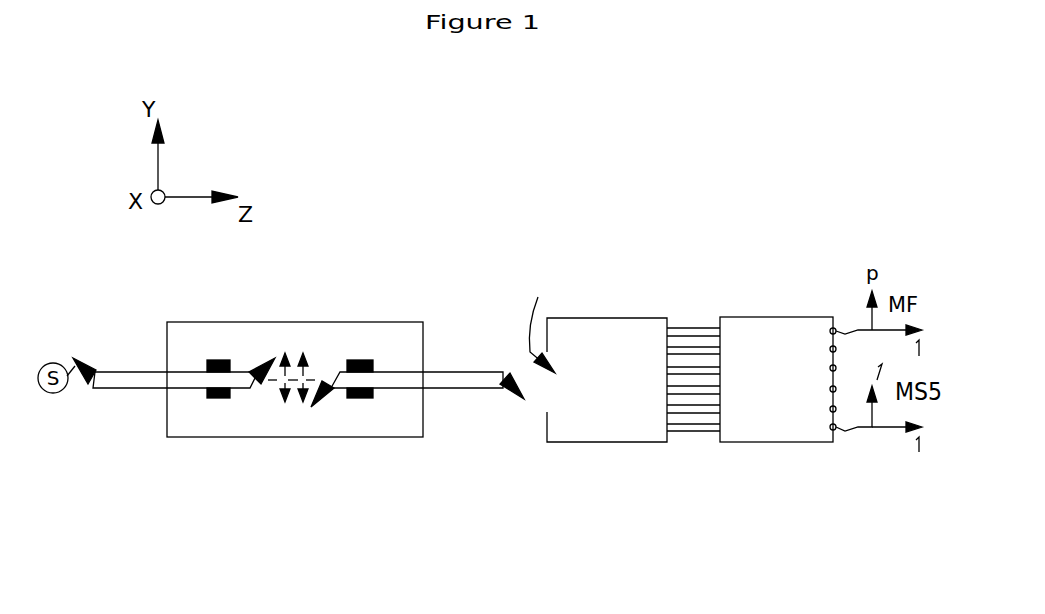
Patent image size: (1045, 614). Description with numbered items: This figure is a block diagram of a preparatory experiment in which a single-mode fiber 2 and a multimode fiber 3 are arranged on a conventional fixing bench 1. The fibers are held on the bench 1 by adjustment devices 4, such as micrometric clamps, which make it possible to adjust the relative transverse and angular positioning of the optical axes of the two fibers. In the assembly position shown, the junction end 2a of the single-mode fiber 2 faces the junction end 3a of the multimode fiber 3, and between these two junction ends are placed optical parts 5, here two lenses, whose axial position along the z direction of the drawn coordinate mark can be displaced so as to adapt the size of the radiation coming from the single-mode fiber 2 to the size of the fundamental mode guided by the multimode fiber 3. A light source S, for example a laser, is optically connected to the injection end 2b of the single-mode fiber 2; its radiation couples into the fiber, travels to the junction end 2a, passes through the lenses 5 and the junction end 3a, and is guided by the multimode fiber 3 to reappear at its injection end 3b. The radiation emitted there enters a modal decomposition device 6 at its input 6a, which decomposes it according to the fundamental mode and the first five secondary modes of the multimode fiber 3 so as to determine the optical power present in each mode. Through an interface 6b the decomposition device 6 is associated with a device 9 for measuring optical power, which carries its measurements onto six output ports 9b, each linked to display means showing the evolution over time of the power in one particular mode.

The fixing bench 1 is at (200, 427).
The single-mode fiber 2 is at (137, 371).
The junction end of the single-mode fiber 2a is at (276, 360).
The injection end of the single-mode fiber 2b is at (74, 357).
The multimode fiber 3 is at (458, 372).
The junction end of the multimode fiber 3a is at (318, 398).
The injection end of the multimode fiber 3b is at (524, 400).
The adjustment devices 4 is at (216, 360).
The optical parts 5 is at (316, 372).
The modal decomposition device 6 is at (600, 290).
The detector input 6a is at (541, 318).
The interface 6b is at (693, 300).
The device for measuring optical power 9 is at (790, 442).
The output ports 9b is at (833, 328).